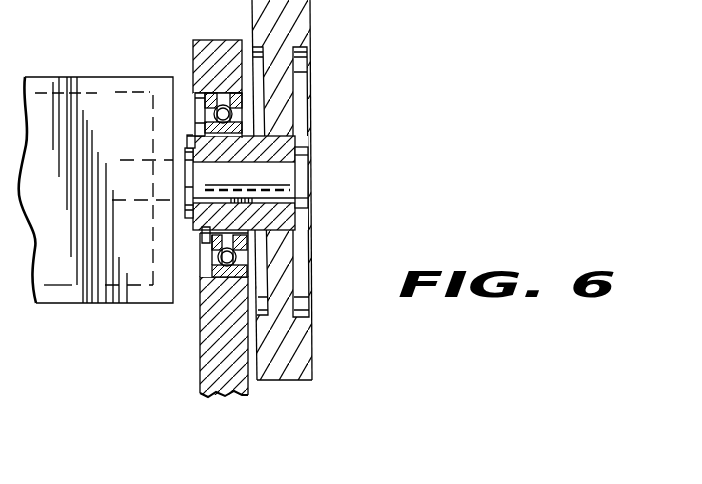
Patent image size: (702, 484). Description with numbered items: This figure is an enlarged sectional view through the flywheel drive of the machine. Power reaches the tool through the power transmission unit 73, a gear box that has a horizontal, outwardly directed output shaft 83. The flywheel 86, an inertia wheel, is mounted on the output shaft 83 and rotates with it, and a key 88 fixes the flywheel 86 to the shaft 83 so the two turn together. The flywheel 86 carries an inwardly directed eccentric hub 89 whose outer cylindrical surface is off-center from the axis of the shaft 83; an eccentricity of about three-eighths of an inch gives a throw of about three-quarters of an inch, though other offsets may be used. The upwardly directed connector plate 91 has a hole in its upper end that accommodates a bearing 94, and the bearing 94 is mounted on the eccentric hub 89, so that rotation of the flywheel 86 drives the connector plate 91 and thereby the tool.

The power transmission unit 73 is at (58, 97).
The output shaft 83 is at (305, 173).
The flywheel 86 is at (287, 18).
The key 88 is at (258, 207).
The eccentric hub 89 is at (200, 213).
The connector plate 91 is at (223, 360).
The bearing 94 is at (203, 124).